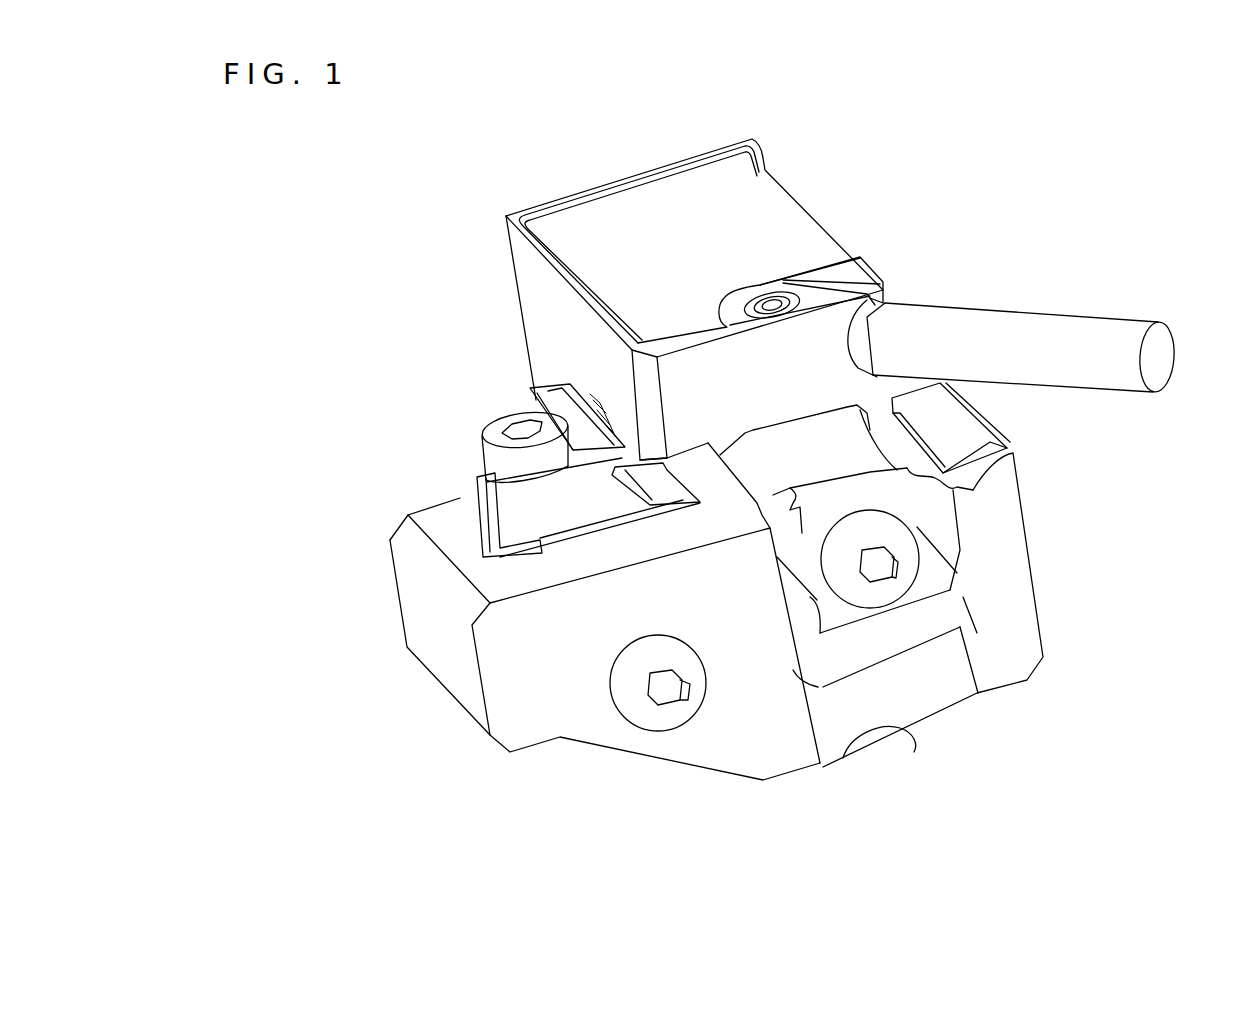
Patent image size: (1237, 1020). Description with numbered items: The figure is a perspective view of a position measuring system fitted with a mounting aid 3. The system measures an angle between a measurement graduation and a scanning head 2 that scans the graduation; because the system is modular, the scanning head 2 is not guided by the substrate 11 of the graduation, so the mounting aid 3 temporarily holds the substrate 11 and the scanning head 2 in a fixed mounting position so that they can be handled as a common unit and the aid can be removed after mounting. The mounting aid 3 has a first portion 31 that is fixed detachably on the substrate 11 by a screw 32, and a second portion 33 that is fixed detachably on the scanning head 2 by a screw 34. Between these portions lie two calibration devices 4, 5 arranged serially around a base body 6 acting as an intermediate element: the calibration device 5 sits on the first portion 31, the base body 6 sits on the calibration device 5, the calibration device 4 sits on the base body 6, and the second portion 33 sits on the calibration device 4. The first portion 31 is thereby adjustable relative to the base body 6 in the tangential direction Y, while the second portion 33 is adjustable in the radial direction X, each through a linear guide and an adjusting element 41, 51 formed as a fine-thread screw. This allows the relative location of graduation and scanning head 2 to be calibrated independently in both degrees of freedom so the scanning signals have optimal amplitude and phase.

The scanning head 2 is at (766, 198).
The mounting aid 3 is at (415, 683).
The calibration device 4 is at (945, 613).
The calibration device 5 is at (440, 478).
The base body 6 is at (747, 748).
The substrate 11 is at (532, 390).
The first portion 31 is at (543, 512).
The screw 32 is at (503, 447).
The second portion 33 is at (897, 500).
The screw 34 is at (897, 547).
The adjusting element 41 is at (890, 743).
The adjusting element 51 is at (645, 713).